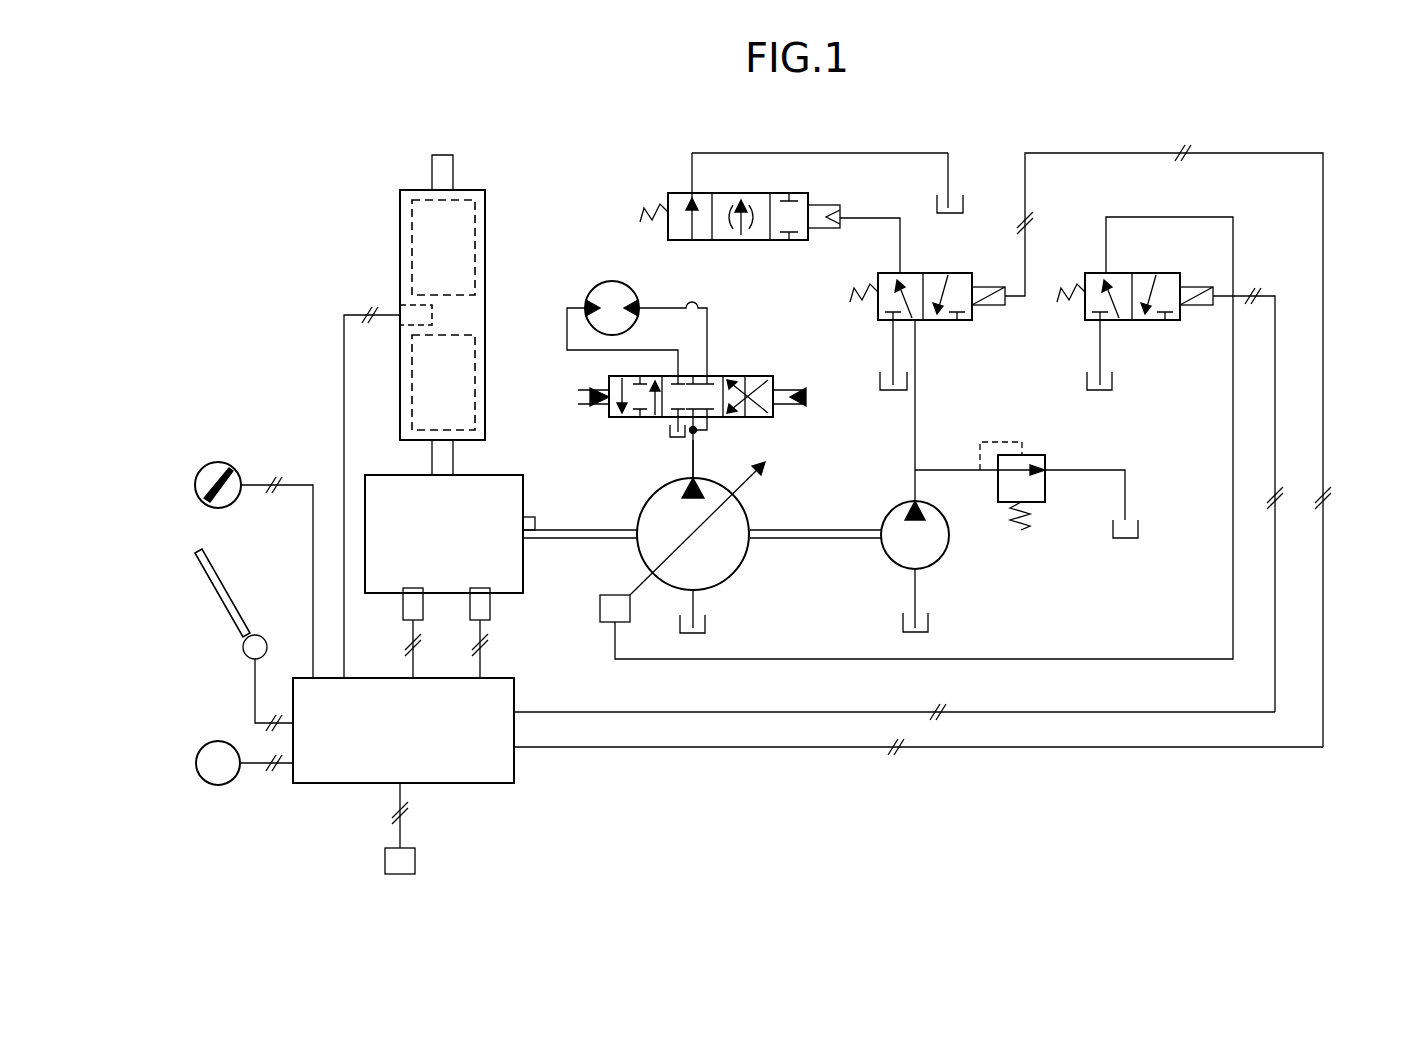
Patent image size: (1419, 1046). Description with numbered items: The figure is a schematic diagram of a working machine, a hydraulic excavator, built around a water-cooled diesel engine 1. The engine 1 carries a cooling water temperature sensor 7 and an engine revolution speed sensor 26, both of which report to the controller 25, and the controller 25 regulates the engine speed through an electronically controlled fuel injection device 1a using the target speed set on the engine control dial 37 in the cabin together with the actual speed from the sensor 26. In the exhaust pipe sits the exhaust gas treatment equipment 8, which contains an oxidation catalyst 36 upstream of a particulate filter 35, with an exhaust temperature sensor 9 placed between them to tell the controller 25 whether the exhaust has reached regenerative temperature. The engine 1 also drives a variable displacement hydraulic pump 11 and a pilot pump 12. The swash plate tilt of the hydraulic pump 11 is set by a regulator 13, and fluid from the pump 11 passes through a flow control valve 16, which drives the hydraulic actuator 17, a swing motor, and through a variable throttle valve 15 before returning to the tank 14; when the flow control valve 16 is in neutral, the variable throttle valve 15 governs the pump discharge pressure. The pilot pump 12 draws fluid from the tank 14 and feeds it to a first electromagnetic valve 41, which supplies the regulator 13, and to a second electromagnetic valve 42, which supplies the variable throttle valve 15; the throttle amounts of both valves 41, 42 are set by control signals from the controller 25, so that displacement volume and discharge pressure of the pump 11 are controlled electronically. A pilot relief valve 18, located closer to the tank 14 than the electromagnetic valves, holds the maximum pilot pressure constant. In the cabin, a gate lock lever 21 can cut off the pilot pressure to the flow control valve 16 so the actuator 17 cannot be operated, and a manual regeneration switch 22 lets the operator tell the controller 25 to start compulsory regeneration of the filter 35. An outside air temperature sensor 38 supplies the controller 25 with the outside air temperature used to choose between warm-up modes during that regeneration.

The diesel engine 1 is at (512, 475).
The fuel injection device 1a is at (403, 607).
The cooling water temperature sensor 7 is at (490, 607).
The exhaust gas treatment equipment 8 is at (470, 190).
The exhaust temperature sensor 9 is at (412, 305).
The variable displacement hydraulic pump 11 is at (748, 555).
The pilot pump 12 is at (948, 545).
The regulator 13 is at (600, 605).
The tank 14 is at (705, 623).
The variable throttle valve 15 is at (782, 240).
The flow control valve 16 is at (740, 376).
The hydraulic actuator 17 is at (612, 281).
The pilot relief valve 18 is at (1045, 490).
The gate lock lever 21 is at (228, 592).
The manual regeneration switch 22 is at (218, 785).
The controller 25 is at (514, 690).
The engine revolution speed sensor 26 is at (535, 521).
The filter 35 is at (475, 243).
The oxidation catalyst 36 is at (475, 388).
The engine control dial 37 is at (218, 462).
The outside air temperature sensor 38 is at (415, 860).
The first electromagnetic valve 41 is at (1140, 320).
The second electromagnetic valve 42 is at (935, 320).